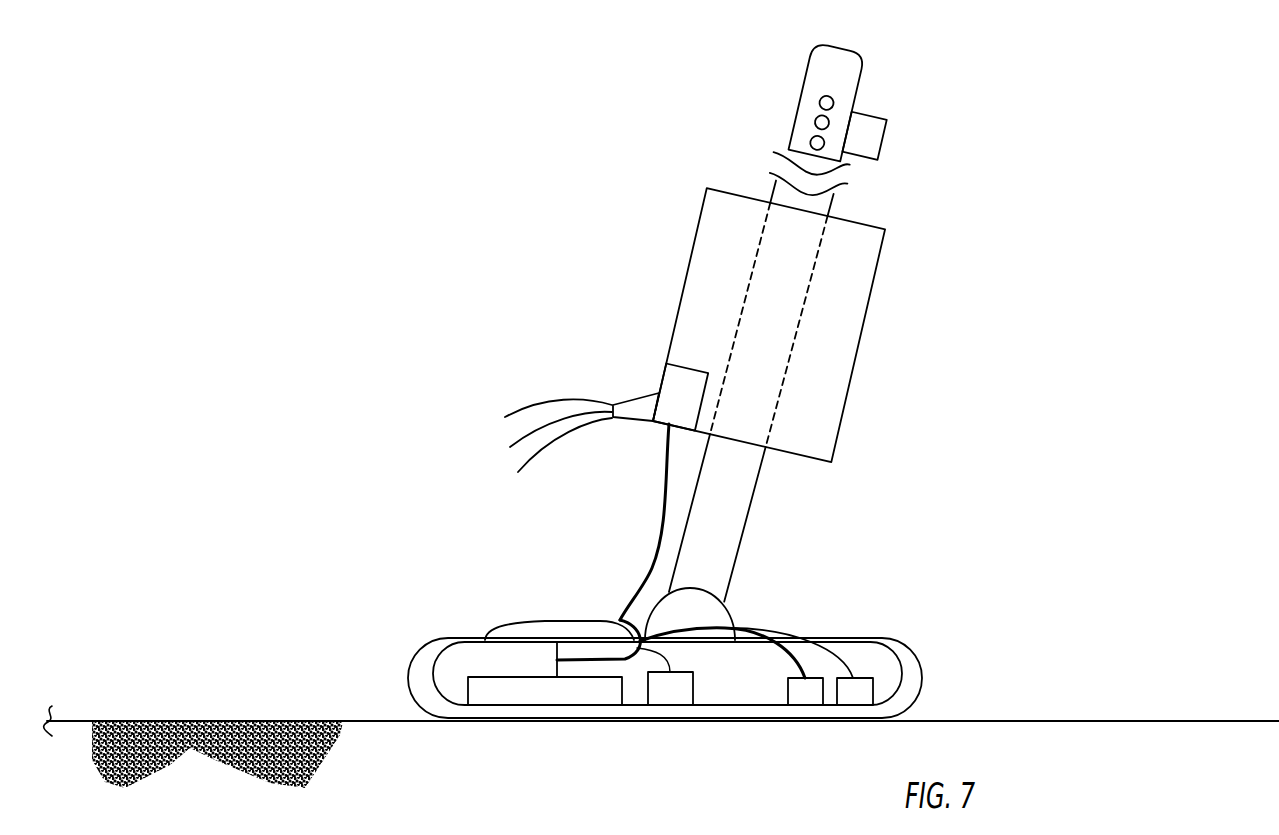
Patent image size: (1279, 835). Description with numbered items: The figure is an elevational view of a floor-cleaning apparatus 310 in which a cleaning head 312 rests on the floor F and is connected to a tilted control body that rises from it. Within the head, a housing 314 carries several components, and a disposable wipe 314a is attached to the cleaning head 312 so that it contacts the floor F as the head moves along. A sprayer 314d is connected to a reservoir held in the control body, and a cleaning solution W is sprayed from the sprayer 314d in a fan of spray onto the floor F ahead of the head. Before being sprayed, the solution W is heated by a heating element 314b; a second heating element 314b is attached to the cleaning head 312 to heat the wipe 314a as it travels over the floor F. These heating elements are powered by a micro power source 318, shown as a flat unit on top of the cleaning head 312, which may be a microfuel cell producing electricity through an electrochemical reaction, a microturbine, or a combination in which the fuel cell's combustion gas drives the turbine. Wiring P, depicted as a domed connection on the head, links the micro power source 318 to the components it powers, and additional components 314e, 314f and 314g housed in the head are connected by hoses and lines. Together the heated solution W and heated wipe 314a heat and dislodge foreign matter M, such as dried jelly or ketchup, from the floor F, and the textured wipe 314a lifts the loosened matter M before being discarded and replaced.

The floor-cleaning apparatus 310 is at (1028, 343).
The cleaning head 312 is at (830, 582).
The housing 314 is at (763, 680).
The disposable wipe 314a is at (920, 700).
The heating element 314b is at (682, 387).
The sprayer 314d is at (633, 400).
The pump 314e is at (675, 690).
The battery 314f is at (813, 700).
The motor 314g is at (866, 643).
The micro power source 318 is at (528, 622).
The cleaning solution W is at (537, 452).
The wiring P is at (655, 565).
The floor F is at (661, 713).
The foreign matter M is at (197, 748).